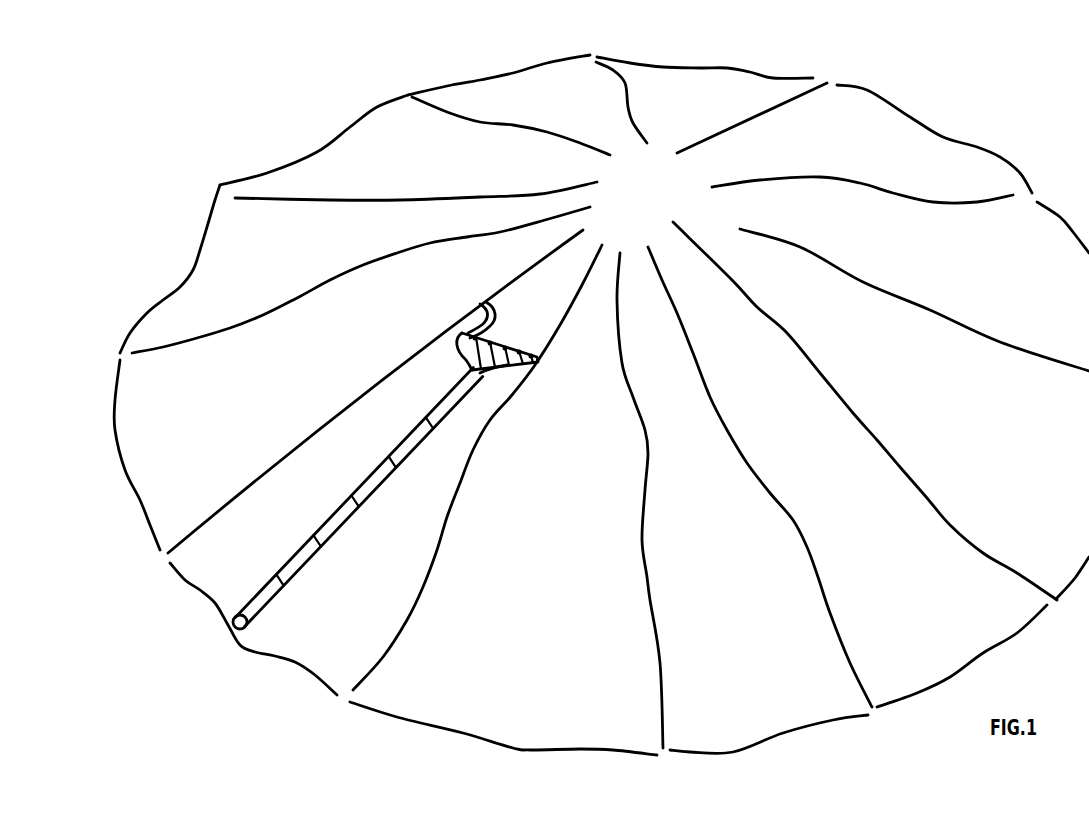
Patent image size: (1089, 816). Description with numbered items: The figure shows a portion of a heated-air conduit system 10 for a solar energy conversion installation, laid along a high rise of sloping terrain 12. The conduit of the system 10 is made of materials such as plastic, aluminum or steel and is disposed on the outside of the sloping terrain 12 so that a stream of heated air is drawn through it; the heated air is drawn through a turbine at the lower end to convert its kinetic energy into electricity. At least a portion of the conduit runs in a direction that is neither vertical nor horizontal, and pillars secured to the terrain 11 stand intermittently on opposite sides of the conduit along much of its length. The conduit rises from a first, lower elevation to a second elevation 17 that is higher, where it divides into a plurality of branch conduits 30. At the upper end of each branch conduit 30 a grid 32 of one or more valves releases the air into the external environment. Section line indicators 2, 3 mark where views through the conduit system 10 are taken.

The heated-air conduit system 10 is at (385, 453).
The terrain 11 is at (418, 539).
The sloping terrain 12 is at (367, 481).
The second elevation 17 is at (578, 384).
The branch conduits 30 is at (460, 350).
The grid 32 is at (487, 302).
The section line 2- 2 is at (533, 348).
The section line 3- 3 is at (433, 460).